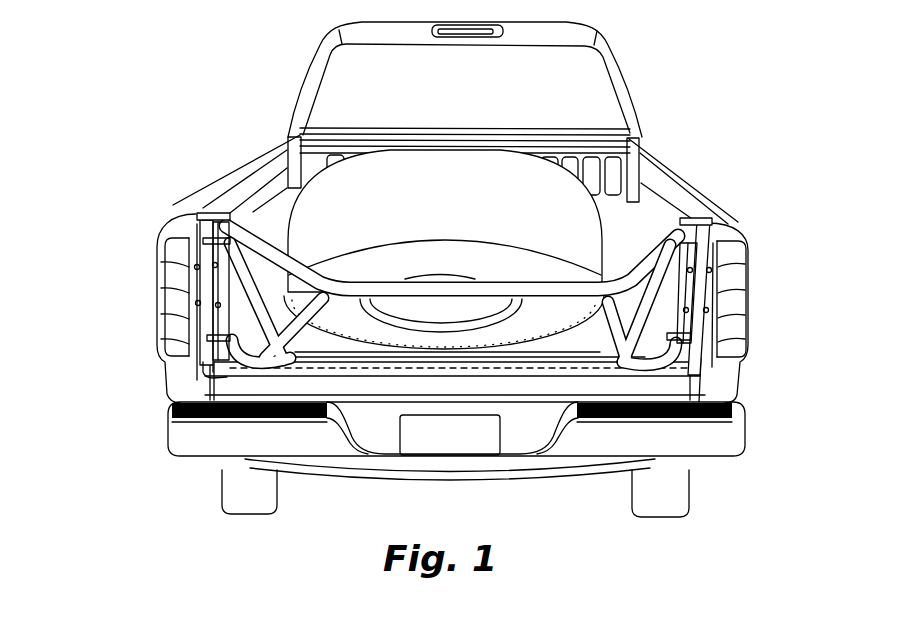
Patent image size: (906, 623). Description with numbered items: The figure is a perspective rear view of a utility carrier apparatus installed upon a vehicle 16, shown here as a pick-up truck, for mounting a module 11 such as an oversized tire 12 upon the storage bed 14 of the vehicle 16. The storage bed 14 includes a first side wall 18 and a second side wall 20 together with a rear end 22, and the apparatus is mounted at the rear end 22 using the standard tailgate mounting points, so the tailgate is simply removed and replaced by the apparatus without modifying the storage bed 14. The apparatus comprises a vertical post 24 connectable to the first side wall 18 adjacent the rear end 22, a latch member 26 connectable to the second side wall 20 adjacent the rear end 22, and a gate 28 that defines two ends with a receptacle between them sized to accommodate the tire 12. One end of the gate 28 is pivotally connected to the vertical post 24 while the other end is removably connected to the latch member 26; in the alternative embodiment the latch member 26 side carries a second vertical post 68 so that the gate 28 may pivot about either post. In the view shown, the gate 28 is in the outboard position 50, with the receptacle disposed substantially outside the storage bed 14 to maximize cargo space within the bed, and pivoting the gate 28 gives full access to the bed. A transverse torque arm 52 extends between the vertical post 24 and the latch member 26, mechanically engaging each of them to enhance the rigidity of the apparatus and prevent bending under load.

The module 11 is at (441, 211).
The tire 12 is at (488, 211).
The storage bed 14 is at (294, 146).
The vehicle 16 is at (318, 52).
The first side wall 18 is at (670, 182).
The second side wall 20 is at (252, 175).
The rear end 22 is at (717, 394).
The vertical post 24 is at (703, 218).
The latch member 26 is at (207, 227).
The gate 28 is at (240, 248).
The outboard position 50 is at (770, 222).
The transverse torque arm 52 is at (220, 373).
The second vertical post 68 is at (158, 282).